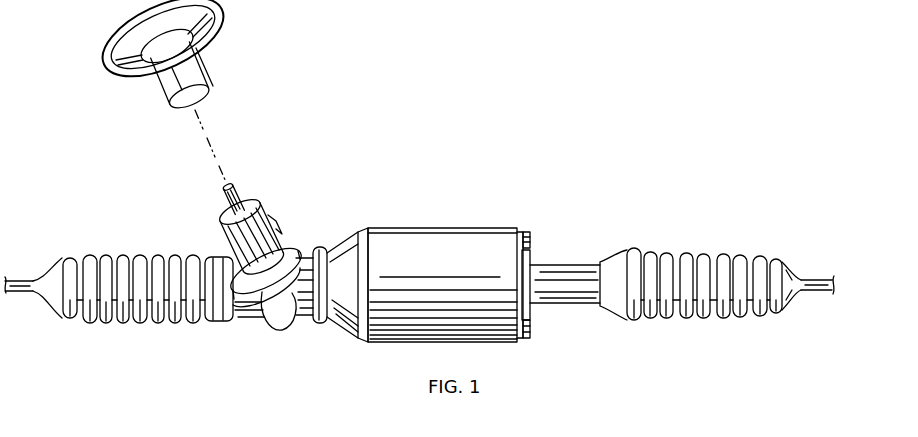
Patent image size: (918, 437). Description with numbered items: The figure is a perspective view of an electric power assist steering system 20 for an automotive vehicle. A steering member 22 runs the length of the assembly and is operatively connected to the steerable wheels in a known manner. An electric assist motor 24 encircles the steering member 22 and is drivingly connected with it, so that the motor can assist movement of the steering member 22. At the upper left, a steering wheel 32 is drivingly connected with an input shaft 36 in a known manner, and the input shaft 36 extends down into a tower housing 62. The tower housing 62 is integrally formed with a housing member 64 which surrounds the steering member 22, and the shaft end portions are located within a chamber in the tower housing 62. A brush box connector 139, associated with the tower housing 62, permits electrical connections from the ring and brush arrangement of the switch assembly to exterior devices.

The electric power assist steering system 20 is at (578, 78).
The steering member 22 is at (815, 287).
The electric assist motor 24 is at (472, 245).
The steering wheel 32 is at (218, 27).
The input shaft 36 is at (227, 198).
The tower housing 62 is at (266, 220).
The housing member 64 is at (308, 252).
The brush box connector 139 is at (285, 232).